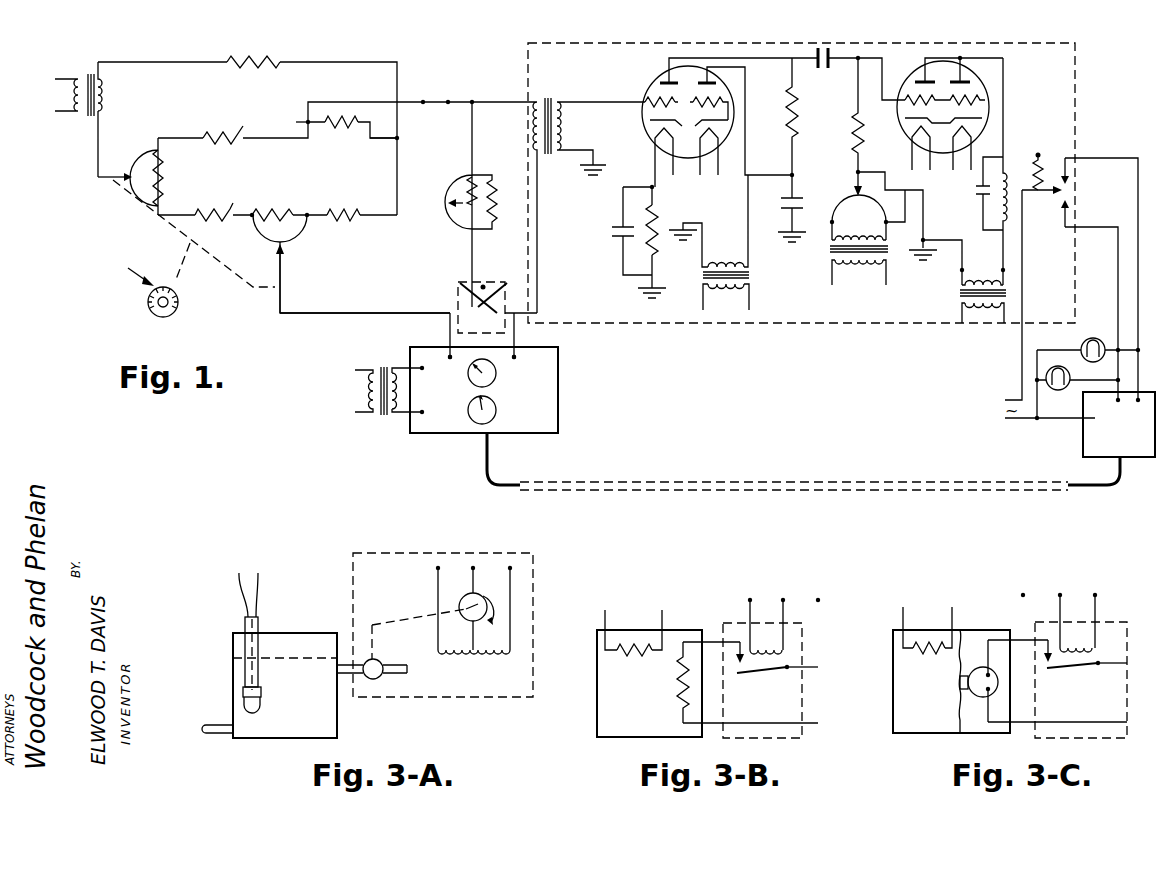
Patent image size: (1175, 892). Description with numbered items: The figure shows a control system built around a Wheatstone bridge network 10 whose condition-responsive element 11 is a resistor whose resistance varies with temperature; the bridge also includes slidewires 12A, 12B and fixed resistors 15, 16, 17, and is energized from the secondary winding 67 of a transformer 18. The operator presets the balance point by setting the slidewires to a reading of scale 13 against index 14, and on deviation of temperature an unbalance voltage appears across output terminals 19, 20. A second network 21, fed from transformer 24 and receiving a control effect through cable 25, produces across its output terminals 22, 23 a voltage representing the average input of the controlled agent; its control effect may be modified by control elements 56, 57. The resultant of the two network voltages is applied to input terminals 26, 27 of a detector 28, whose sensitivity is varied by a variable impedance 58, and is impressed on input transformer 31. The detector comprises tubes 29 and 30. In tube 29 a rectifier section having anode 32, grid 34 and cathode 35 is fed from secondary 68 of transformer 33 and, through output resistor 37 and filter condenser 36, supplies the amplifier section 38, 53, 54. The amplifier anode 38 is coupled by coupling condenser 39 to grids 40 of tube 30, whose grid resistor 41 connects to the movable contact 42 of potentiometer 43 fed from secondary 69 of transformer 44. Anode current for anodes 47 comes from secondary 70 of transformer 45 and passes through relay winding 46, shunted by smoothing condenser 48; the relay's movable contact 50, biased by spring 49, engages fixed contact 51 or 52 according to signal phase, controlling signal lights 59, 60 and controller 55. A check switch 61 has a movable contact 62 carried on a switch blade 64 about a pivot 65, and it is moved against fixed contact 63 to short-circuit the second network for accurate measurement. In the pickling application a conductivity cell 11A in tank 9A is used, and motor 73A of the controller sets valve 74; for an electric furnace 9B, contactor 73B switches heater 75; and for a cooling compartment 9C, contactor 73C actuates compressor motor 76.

In FIG. 3-A, the tank 9A is at (338, 735).
In FIG. 3-B, the electric furnace 9B is at (600, 737).
In FIG. 3-C, the freezing or cooling compartment 9C is at (912, 733).
In FIG. 1, the network 10 is at (283, 184).
In FIG. 1, the element 11 is at (342, 130).
In FIG. 3-B, the element 11 is at (623, 656).
In FIG. 3-C, the element 11 is at (928, 651).
In FIG. 3-A, the conductivity cell 11A is at (259, 623).
In FIG. 1, the slidewire 12A is at (133, 158).
In FIG. 1, the slidewire 12B is at (300, 240).
In FIG. 1, the scale 13 is at (179, 302).
In FIG. 1, the index 14 is at (128, 279).
In FIG. 1, the fixed resistor 15 is at (215, 133).
In FIG. 1, the fixed resistor 16 is at (205, 214).
In FIG. 1, the fixed resistor 17 is at (345, 217).
In FIG. 1, the transformer 18 is at (86, 118).
In FIG. 1, the output terminal 19 is at (289, 122).
In FIG. 1, the output terminal 20 is at (283, 290).
In FIG. 1, the second network 21 is at (530, 404).
In FIG. 1, the output terminal 22 is at (450, 360).
In FIG. 1, the output terminal 23 is at (516, 358).
In FIG. 1, the transformer 24 is at (360, 437).
In FIG. 1, the cable 25 is at (493, 458).
In FIG. 1, the input terminal 26 is at (538, 102).
In FIG. 1, the input terminal 27 is at (540, 167).
In FIG. 1, the detector 28 is at (776, 317).
In FIG. 1, the tube 29 is at (630, 124).
In FIG. 1, the tube 30 is at (955, 189).
In FIG. 1, the input transformer 31 is at (552, 174).
In FIG. 1, the anode 32 is at (712, 82).
In FIG. 1, the transformer 33 is at (752, 282).
In FIG. 1, the grid 34 is at (722, 104).
In FIG. 1, the cathode 35 is at (722, 118).
In FIG. 1, the filter condenser 36 is at (791, 199).
In FIG. 1, the output resistor 37 is at (797, 104).
In FIG. 1, the anode 38 is at (662, 80).
In FIG. 1, the coupling condenser 39 is at (826, 66).
In FIG. 1, the grids 40 is at (982, 100).
In FIG. 1, the grid resistor 41 is at (852, 145).
In FIG. 1, the movable contact 42 is at (854, 185).
In FIG. 1, the potentiometer 43 is at (836, 212).
In FIG. 1, the transformer 44 is at (830, 255).
In FIG. 1, the transformer 45 is at (960, 299).
In FIG. 1, the relay winding 46 is at (1005, 175).
In FIG. 1, the anodes 47 is at (968, 83).
In FIG. 1, the smoothing condenser 48 is at (976, 197).
In FIG. 1, the spring 49 is at (1041, 172).
In FIG. 1, the movable contact 50 is at (1068, 192).
In FIG. 1, the fixed contact 51 is at (1070, 170).
In FIG. 1, the fixed contact 52 is at (1072, 217).
In FIG. 1, the amplifier section element 53 is at (655, 100).
In FIG. 1, the cathode 54 is at (652, 136).
In FIG. 1, the controller 55 is at (1112, 449).
In FIG. 3-A, the controller 55 is at (495, 684).
In FIG. 3-B, the controller 55 is at (786, 712).
In FIG. 3-C, the controller 55 is at (1096, 706).
In FIG. 1, the throttling range control 56 is at (497, 375).
In FIG. 1, the control element 57 is at (497, 419).
In FIG. 1, the variable impedance 58 is at (455, 239).
In FIG. 1, the signal light 59 is at (1081, 346).
In FIG. 1, the signal light 60 is at (1046, 380).
In FIG. 1, the check switch 61 is at (458, 303).
In FIG. 1, the contact 62 is at (505, 286).
In FIG. 1, the fixed contact 63 is at (474, 312).
In FIG. 1, the switch blade 64 is at (463, 286).
In FIG. 1, the pivot 65 is at (485, 284).
In FIG. 1, the secondary winding 67 is at (103, 84).
In FIG. 1, the secondary 68 is at (722, 262).
In FIG. 1, the secondary 69 is at (860, 238).
In FIG. 1, the secondary 70 is at (984, 284).
In FIG. 3-A, the motor 73A is at (487, 604).
In FIG. 3-B, the contactor 73B is at (790, 666).
In FIG. 3-C, the contactor 73C is at (1101, 662).
In FIG. 3-A, the valve 74 is at (379, 678).
In FIG. 3-B, the heater 75 is at (677, 694).
In FIG. 3-C, the compressor motor 76 is at (976, 668).